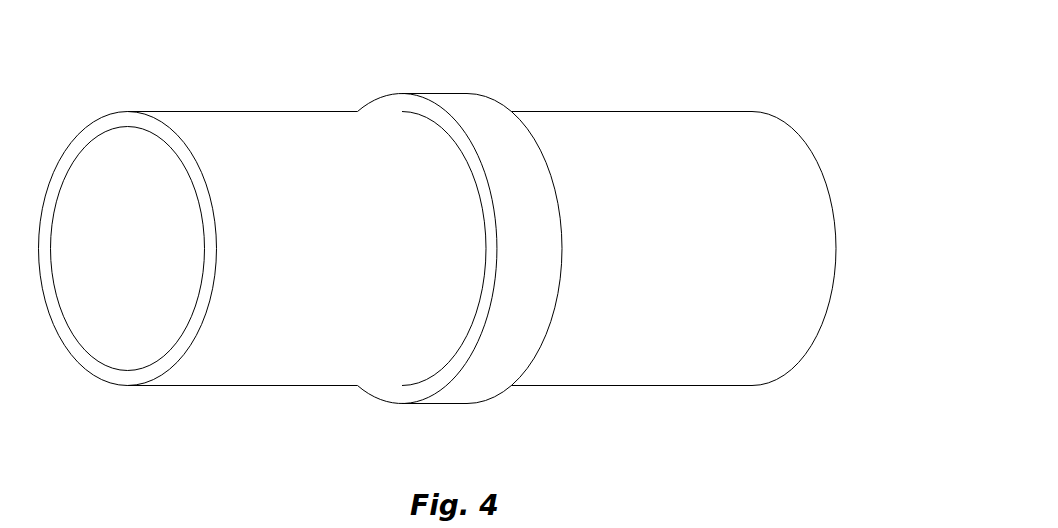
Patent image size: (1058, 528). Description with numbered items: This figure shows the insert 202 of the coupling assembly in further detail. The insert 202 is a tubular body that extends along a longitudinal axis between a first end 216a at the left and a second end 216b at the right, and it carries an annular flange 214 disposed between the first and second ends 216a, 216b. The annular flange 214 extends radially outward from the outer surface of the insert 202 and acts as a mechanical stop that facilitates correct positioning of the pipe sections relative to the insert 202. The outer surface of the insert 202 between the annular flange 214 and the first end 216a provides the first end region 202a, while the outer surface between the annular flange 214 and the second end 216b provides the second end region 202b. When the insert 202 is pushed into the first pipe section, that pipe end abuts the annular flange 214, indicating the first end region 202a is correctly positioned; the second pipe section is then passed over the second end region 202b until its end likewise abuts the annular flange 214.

The insert 202 is at (481, 265).
The first end region 202a is at (198, 311).
The second end region 202b is at (717, 278).
The annular flange 214 is at (478, 123).
The first end 216a is at (112, 372).
The second end 216b is at (832, 292).